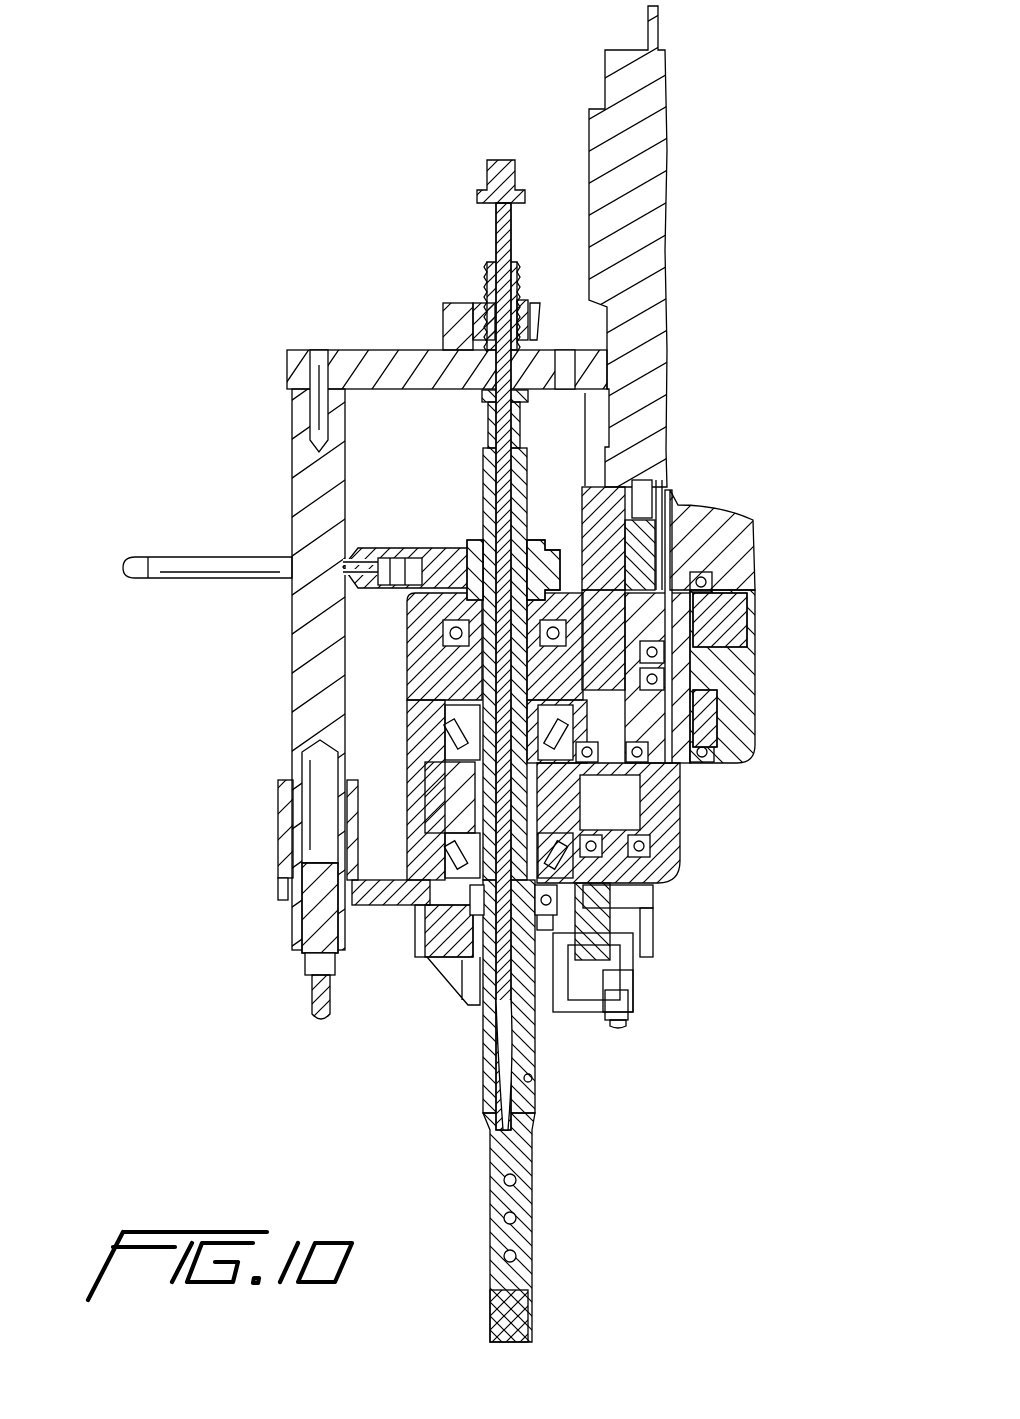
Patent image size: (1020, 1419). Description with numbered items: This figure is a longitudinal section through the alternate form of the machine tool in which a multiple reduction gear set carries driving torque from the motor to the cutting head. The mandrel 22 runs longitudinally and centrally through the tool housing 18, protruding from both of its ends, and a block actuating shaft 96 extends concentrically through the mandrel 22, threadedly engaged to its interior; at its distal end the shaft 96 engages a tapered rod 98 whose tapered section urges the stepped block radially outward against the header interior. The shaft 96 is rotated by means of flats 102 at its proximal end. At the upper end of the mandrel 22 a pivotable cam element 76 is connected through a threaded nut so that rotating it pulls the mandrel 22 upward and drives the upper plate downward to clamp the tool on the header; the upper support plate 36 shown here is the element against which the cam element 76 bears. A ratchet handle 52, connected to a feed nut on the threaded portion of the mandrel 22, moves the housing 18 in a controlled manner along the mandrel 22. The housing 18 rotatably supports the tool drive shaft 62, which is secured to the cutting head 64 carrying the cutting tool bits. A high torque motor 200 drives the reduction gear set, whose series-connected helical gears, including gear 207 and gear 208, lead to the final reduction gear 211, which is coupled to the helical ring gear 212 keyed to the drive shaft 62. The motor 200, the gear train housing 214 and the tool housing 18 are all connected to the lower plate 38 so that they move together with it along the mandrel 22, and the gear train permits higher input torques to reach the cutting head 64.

The motor 200 is at (590, 118).
The flats 102 is at (487, 180).
The block actuating shaft 96 is at (496, 235).
The mandrel 22 is at (487, 285).
The support plate 36 is at (345, 350).
The cam element 76 is at (443, 325).
The ratchet handle 52 is at (196, 557).
The housing 18 is at (407, 672).
The helical ring gear 212 is at (440, 783).
The tool drive shaft 62 is at (473, 797).
The gear train housing 214 is at (757, 555).
The helical gear 207 is at (745, 603).
The helical gear 208 is at (710, 702).
The final reduction gear 211 is at (637, 818).
The lower plate 38 is at (389, 922).
The cutting head 64 is at (430, 967).
The tapered rod 98 is at (520, 1005).